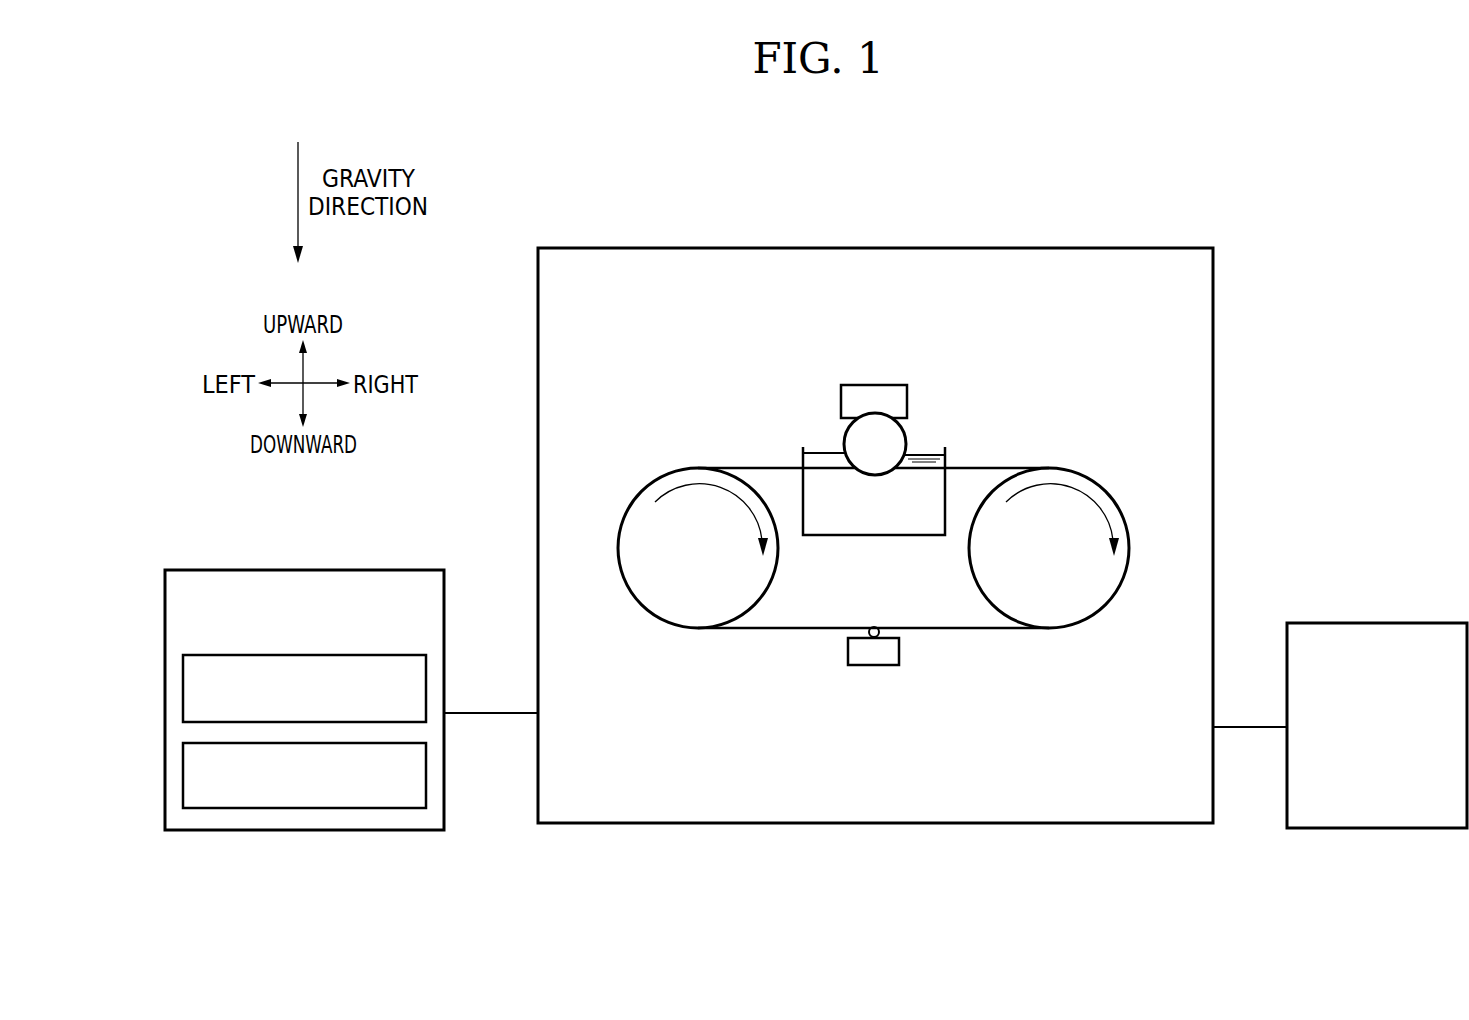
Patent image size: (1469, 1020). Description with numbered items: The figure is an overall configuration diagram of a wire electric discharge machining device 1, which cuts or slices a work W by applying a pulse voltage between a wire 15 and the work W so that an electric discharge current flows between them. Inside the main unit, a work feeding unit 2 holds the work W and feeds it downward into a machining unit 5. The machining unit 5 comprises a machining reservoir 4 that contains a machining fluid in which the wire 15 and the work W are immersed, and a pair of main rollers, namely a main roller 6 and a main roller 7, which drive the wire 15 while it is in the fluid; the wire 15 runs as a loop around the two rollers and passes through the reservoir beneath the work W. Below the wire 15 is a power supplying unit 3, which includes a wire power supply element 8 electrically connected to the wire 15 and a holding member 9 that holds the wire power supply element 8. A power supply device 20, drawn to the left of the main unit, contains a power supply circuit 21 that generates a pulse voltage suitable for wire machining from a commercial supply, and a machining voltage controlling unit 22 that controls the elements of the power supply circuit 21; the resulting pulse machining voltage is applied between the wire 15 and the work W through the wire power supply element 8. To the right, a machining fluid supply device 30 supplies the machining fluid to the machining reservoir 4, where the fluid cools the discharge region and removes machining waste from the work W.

The wire electric discharge machining device 1 is at (1237, 180).
The work feeding unit 2 is at (872, 385).
The power supplying unit 3 is at (885, 677).
The machining reservoir 4 is at (870, 535).
The machining unit 5 is at (899, 393).
The main roller 6 is at (697, 468).
The main roller 7 is at (1097, 485).
The wire power supply element 8 is at (868, 634).
The holding member 9 is at (900, 652).
The wire 15 is at (748, 630).
The power supply device 20 is at (271, 659).
The power supply circuit 21 is at (183, 690).
The machining voltage controlling unit 22 is at (183, 775).
The machining fluid supply device 30 is at (1376, 623).
The work W is at (844, 433).